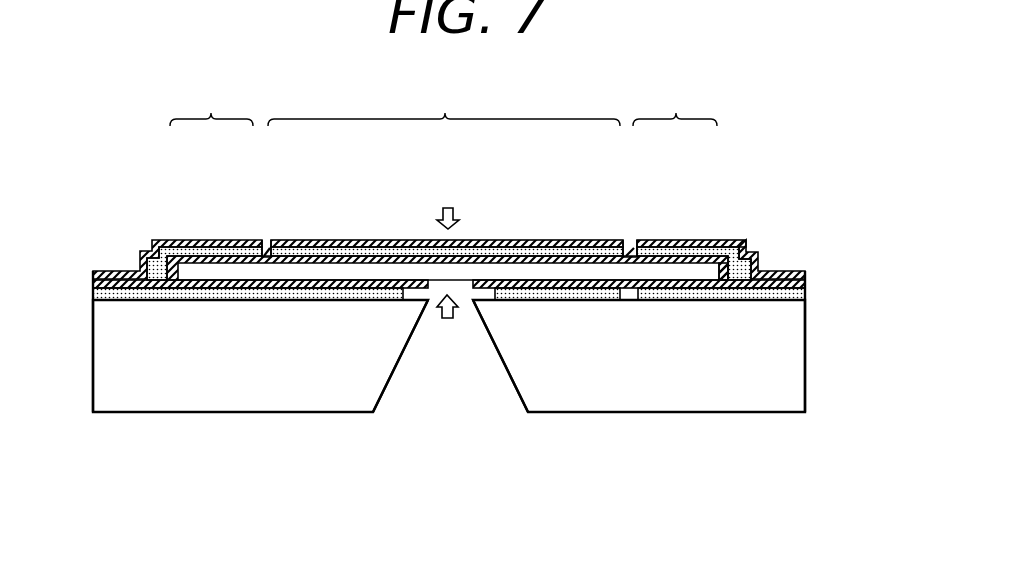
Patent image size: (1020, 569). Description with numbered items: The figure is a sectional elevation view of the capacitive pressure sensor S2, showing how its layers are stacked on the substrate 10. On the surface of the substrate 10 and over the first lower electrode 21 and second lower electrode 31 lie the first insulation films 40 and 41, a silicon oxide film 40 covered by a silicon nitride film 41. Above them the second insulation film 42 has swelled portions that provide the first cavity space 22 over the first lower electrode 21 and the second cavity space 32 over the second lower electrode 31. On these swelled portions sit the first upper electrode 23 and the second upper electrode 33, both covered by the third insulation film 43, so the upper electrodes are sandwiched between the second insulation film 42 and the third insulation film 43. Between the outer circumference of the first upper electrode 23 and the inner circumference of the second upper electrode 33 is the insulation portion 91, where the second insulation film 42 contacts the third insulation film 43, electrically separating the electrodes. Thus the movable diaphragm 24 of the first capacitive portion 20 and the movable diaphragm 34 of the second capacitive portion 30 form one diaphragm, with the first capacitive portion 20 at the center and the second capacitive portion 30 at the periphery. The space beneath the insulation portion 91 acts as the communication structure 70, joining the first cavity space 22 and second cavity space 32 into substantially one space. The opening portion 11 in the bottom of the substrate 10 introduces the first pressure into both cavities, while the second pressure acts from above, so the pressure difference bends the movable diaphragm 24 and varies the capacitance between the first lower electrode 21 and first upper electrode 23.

The capacitive pressure sensor S2 is at (115, 167).
The substrate 10 is at (790, 372).
The opening portion 11 is at (428, 373).
The first capacitive portion 20 is at (444, 107).
The first lower electrode 21 is at (328, 300).
The first cavity space 22 is at (545, 300).
The first upper electrode 23 is at (518, 242).
The movable diaphragm 24 is at (583, 238).
The second capacitive portion 30 is at (443, 107).
The second lower electrode 31 is at (681, 300).
The second cavity space 32 is at (704, 272).
The second upper electrode 33 is at (190, 248).
The movable diaphragm 34 is at (672, 238).
The first insulation film 40 is at (495, 295).
The first insulation film 41 is at (806, 284).
The second insulation film 42 is at (806, 277).
The third insulation film 43 is at (477, 225).
The communication structure 70 is at (265, 272).
The insulation portion 91 is at (632, 233).